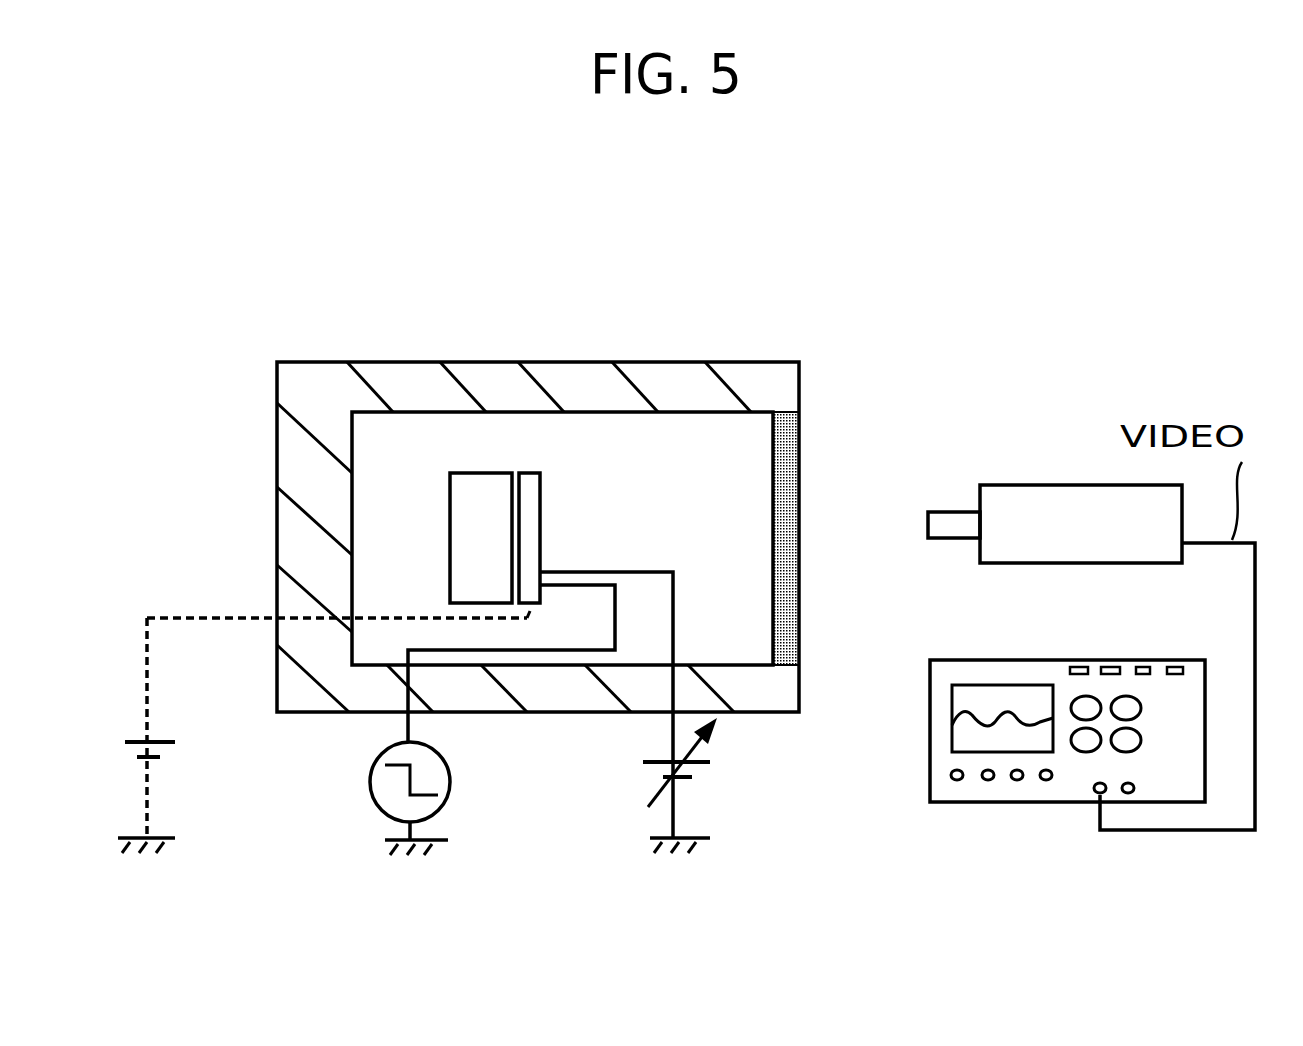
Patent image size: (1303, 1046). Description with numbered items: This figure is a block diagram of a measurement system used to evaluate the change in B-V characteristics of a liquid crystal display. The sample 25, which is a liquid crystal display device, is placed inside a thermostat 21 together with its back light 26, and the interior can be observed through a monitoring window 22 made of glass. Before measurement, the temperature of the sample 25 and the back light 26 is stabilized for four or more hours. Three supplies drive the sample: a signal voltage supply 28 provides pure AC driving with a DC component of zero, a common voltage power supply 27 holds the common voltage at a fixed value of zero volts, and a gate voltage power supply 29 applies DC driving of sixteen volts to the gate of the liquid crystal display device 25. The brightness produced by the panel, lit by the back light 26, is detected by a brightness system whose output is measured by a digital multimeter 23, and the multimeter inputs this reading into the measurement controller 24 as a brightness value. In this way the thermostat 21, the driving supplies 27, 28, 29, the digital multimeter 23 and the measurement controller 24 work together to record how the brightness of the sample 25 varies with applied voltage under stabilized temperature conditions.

The thermostat 21 is at (540, 362).
The monitoring window 22 is at (800, 465).
The digital multimeter 23 is at (1020, 490).
The measurement controller 24 is at (1012, 805).
The sample 25 is at (540, 497).
The back light 26 is at (458, 513).
The common voltage power supply 27 is at (725, 778).
The signal voltage supply 28 is at (460, 766).
The gate voltage power supply 29 is at (185, 745).